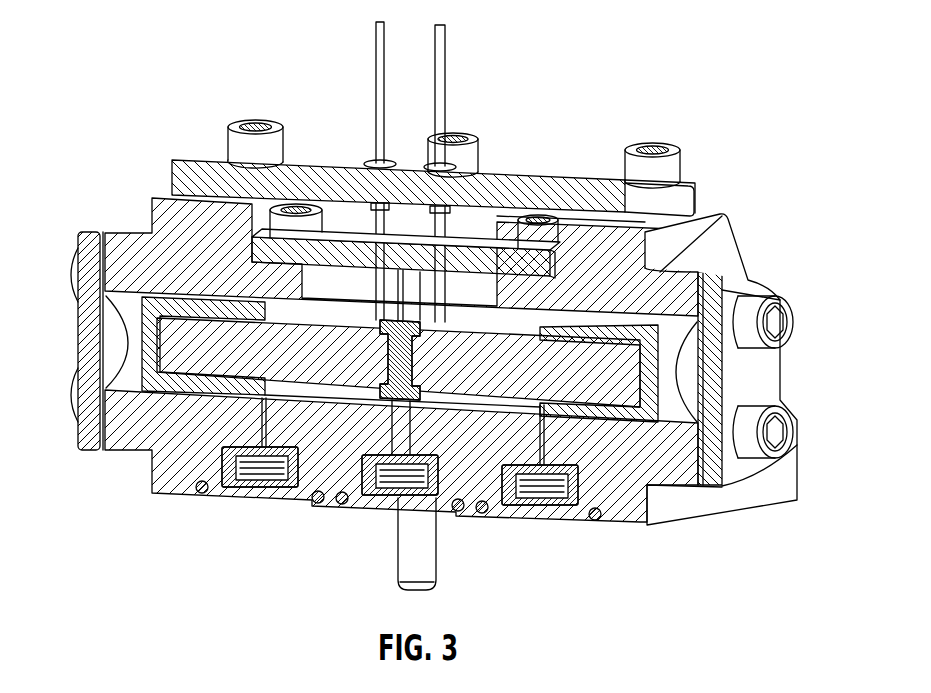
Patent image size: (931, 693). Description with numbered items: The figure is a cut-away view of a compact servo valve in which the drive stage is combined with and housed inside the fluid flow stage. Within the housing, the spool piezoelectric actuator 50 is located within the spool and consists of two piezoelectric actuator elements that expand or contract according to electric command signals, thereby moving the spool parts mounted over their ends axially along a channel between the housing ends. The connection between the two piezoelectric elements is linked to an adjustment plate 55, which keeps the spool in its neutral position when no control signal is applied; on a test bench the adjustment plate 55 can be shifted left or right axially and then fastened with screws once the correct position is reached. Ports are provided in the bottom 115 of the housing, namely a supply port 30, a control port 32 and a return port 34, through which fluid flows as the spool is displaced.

The supply port 30 is at (262, 468).
The control port 32 is at (400, 478).
The return port 34 is at (540, 488).
The spool piezoelectric actuator 50 is at (668, 272).
The adjustment plate 55 is at (478, 232).
The bottom 115 is at (733, 546).